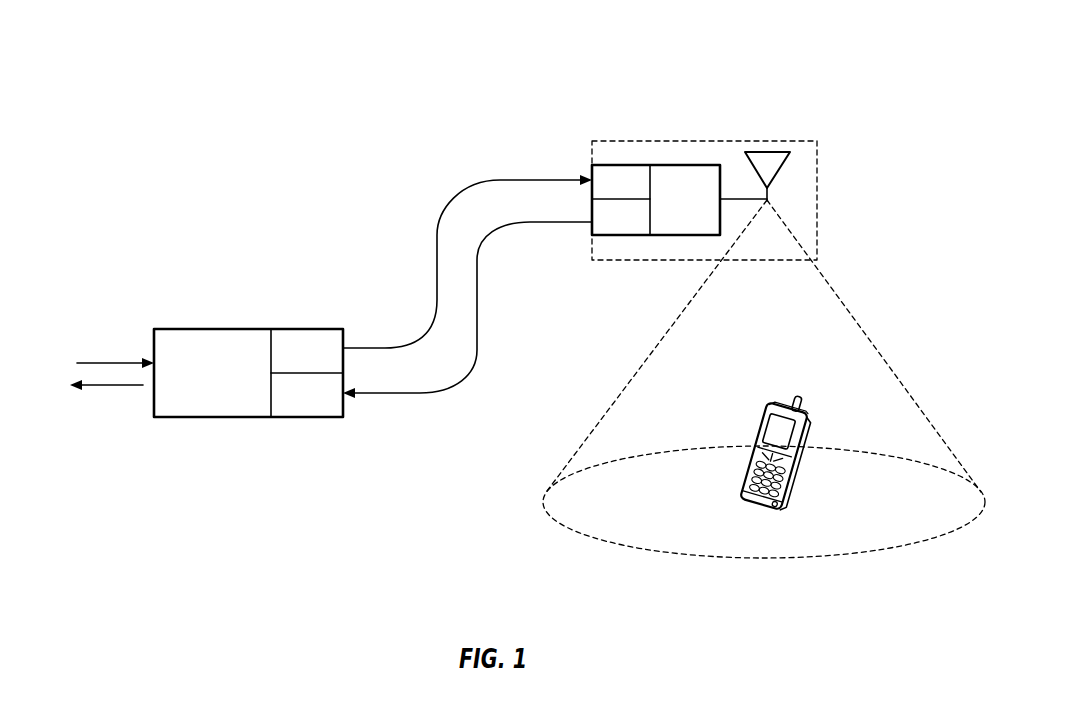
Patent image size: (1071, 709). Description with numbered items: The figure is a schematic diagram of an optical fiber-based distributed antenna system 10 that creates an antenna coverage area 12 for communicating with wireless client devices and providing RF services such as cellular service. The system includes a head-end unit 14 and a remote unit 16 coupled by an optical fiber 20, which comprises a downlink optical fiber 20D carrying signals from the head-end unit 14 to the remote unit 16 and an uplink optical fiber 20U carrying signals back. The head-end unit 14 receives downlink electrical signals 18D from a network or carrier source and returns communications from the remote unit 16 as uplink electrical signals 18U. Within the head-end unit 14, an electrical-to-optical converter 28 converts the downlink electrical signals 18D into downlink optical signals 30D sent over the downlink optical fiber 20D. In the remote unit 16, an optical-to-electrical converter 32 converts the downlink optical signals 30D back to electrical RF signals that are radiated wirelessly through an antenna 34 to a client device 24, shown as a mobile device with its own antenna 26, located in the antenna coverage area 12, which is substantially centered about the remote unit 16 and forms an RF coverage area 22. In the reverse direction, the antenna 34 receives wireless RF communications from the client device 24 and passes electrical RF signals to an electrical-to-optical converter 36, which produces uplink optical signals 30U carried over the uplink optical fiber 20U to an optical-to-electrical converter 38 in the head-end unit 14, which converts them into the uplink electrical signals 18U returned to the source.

The optical fiber-based distributed antenna system 10 is at (562, 78).
The antenna coverage area 12 is at (845, 290).
The head-end unit 14 is at (252, 372).
The remote unit 16 is at (710, 195).
The downlink electrical signals 18D is at (103, 362).
The uplink electrical signals 18U is at (107, 388).
The optical fiber 20 is at (465, 265).
The downlink optical fiber 20D is at (517, 180).
The uplink optical fiber 20U is at (505, 237).
The RF coverage area 22 is at (484, 534).
The client device 24 is at (764, 419).
The antenna 26 is at (775, 393).
The electrical-to-optical converter 28 is at (298, 329).
The downlink optical signals 30D is at (430, 234).
The uplink optical signals 30U is at (478, 368).
The optical-to-electrical converter 32 is at (612, 165).
The antenna 34 is at (773, 177).
The electrical-to-optical converter 36 is at (628, 235).
The optical-to-electrical converter 38 is at (300, 417).